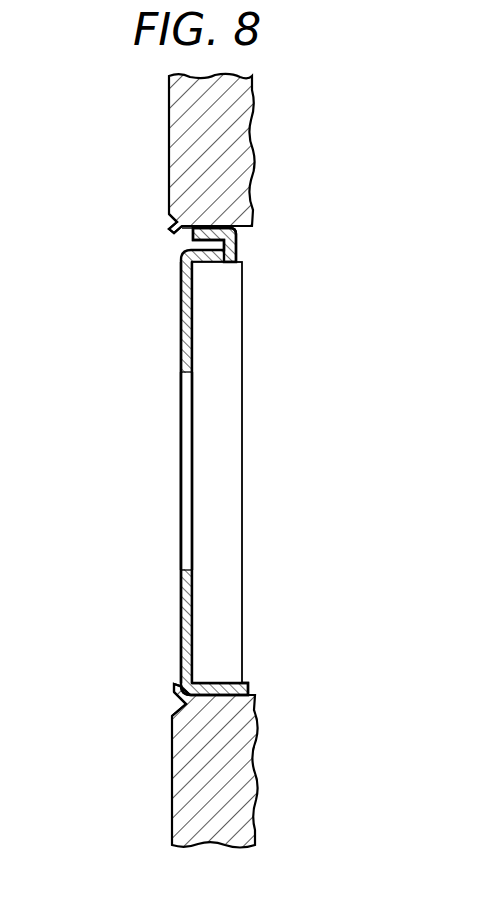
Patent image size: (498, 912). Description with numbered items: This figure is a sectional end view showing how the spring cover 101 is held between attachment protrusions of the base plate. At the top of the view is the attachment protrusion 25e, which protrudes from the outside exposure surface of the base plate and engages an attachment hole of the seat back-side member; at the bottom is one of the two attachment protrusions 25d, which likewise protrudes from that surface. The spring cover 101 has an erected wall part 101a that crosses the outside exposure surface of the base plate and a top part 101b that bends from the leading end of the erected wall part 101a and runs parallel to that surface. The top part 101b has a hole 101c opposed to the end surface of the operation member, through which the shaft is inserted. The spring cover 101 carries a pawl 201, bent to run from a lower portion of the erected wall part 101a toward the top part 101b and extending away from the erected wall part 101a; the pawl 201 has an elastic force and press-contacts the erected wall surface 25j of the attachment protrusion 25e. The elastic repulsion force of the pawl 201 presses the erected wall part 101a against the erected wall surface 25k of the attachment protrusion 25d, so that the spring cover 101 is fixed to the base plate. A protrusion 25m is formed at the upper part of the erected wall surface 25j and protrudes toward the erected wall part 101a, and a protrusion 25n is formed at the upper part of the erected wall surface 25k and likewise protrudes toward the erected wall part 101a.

The attachment protrusion 25e is at (168, 192).
The protrusion 25m is at (170, 227).
The erected wall surface 25j is at (190, 243).
The pawl 201 is at (237, 247).
The spring cover 101 is at (171, 303).
The top part 101b is at (181, 350).
The hole 101c is at (181, 385).
The erected wall part 101a is at (182, 668).
The erected wall surface 25k is at (176, 687).
The protrusion 25n is at (178, 705).
The attachment protrusion 25d is at (172, 748).